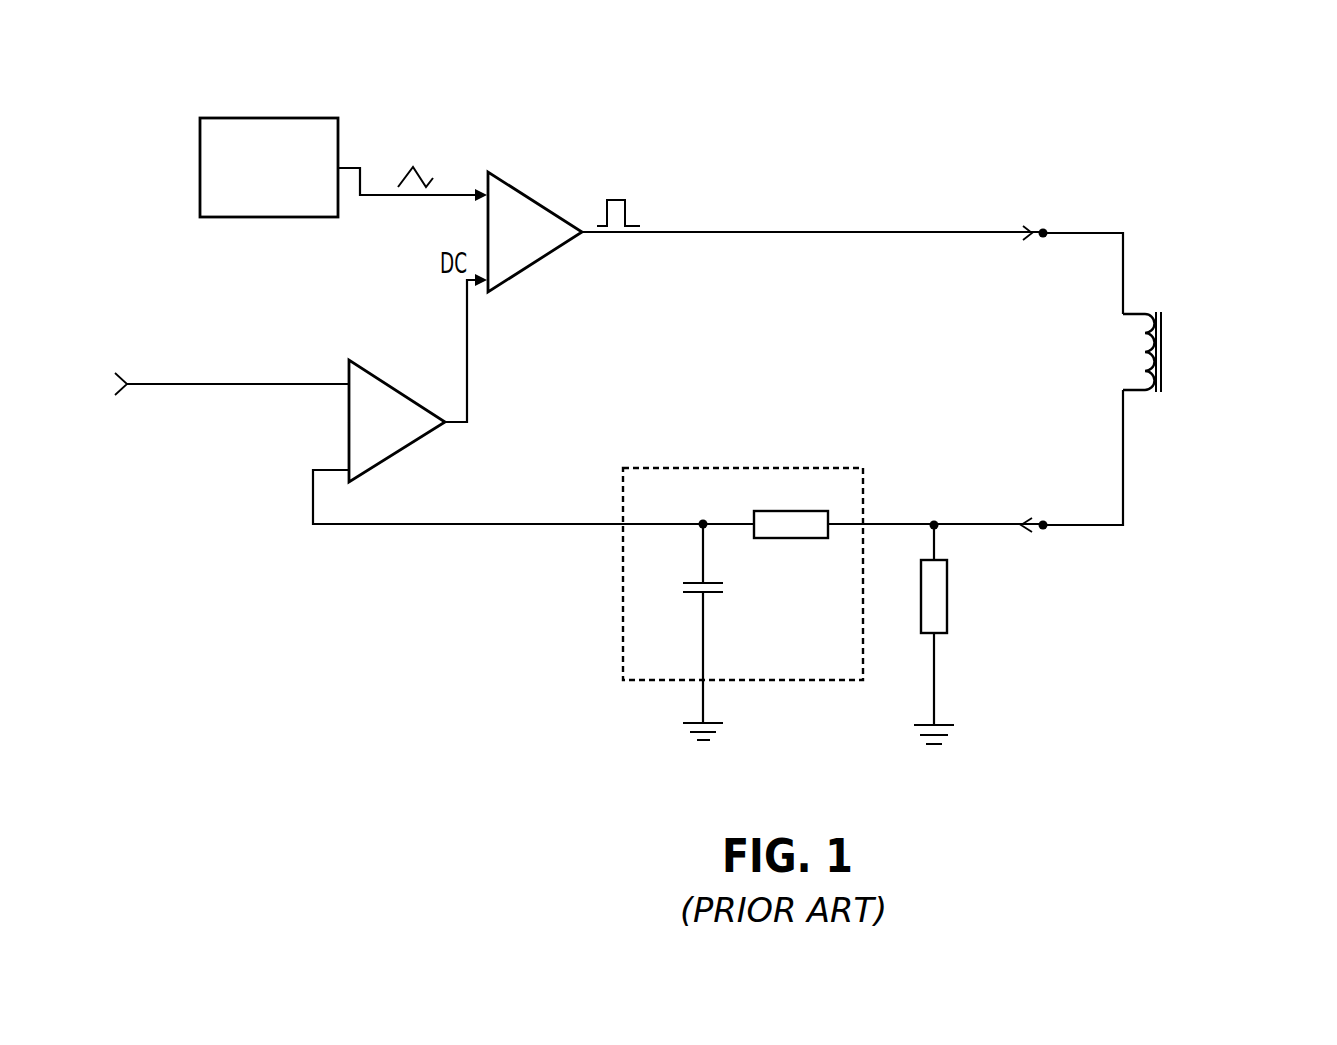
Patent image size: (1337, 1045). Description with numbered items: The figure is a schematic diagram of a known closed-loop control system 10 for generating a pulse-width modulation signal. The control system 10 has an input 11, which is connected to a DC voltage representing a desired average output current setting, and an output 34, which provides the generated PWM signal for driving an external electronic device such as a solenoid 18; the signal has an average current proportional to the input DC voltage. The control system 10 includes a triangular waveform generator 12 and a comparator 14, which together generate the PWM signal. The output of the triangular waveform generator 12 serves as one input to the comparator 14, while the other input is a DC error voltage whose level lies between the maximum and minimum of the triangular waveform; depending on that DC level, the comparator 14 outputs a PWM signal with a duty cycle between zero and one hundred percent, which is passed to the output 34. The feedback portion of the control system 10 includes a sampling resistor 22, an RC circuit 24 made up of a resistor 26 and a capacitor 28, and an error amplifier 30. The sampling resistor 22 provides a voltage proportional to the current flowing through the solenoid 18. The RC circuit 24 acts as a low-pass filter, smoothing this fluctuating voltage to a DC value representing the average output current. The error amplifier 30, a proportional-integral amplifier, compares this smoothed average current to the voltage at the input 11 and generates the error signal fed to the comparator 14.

The closed-loop control system 10 is at (1231, 123).
The input 11 is at (139, 381).
The triangular waveform generator 12 is at (198, 170).
The comparator 14 is at (537, 199).
The solenoid 18 is at (1178, 332).
The sampling resistor 22 is at (947, 597).
The RC circuit 24 is at (748, 466).
The resistor 26 is at (797, 538).
The capacitor 28 is at (710, 595).
The error amplifier 30 is at (400, 386).
The output 34 is at (1030, 232).